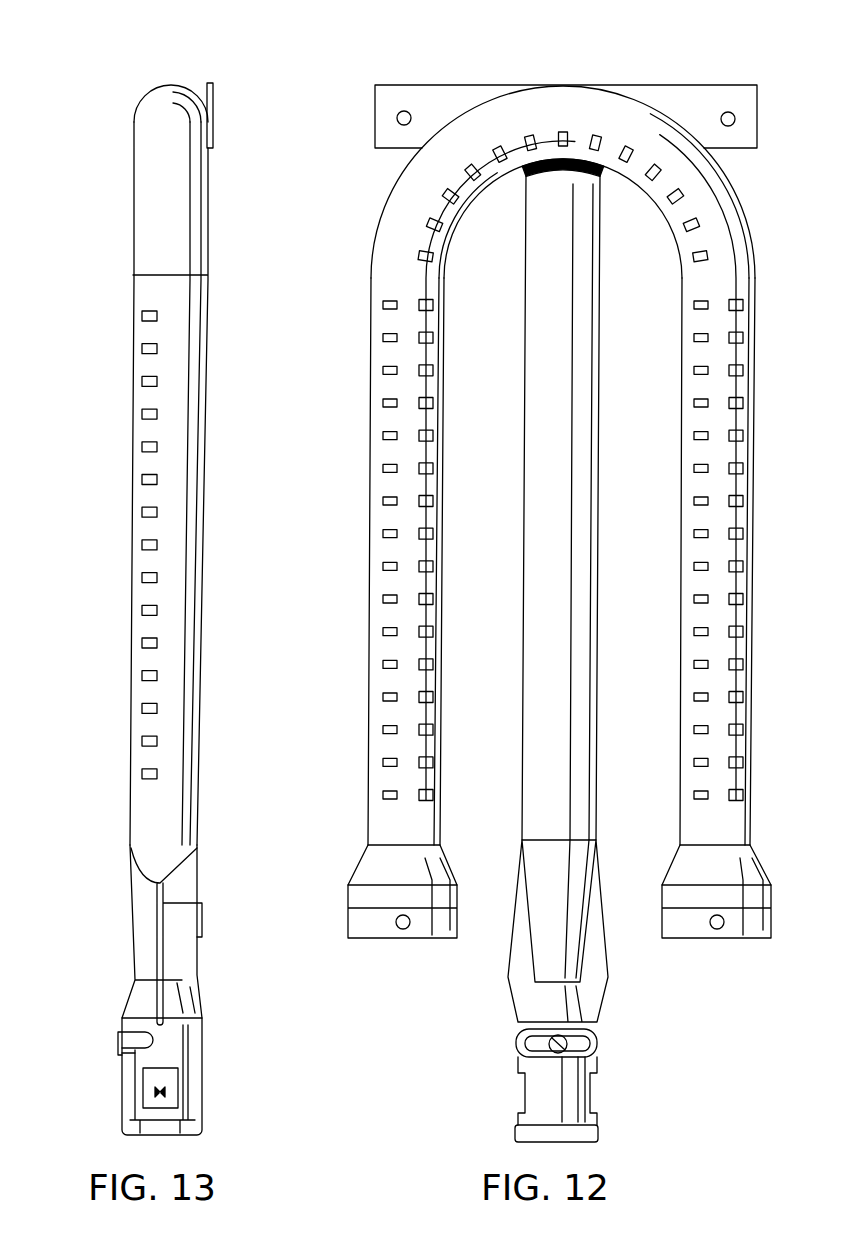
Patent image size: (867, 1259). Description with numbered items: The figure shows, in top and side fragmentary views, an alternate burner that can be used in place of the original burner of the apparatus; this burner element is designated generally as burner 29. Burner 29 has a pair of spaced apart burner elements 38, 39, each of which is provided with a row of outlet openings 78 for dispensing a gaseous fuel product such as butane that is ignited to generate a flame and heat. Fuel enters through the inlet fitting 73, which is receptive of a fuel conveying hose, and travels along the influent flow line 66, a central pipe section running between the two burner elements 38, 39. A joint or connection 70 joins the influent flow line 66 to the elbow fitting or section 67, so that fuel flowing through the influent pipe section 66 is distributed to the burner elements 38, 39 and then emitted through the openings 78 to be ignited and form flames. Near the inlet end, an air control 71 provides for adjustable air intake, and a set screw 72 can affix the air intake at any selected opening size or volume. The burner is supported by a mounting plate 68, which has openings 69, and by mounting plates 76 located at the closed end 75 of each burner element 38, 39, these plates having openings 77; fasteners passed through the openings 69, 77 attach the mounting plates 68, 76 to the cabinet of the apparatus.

In FIG. 12, the burner element 29 is at (406, 70).
In FIG. 13, the burner element 29 is at (104, 728).
In FIG. 12, the burner element 38 is at (370, 530).
In FIG. 12, the burner element 39 is at (742, 198).
In FIG. 12, the influent flow line 66 is at (540, 630).
In FIG. 12, the elbow fitting 67 is at (565, 105).
In FIG. 13, the elbow fitting 67 is at (165, 137).
In FIG. 12, the mounting plate 68 is at (682, 105).
In FIG. 13, the mounting plate 68 is at (213, 95).
In FIG. 12, the openings 69 is at (731, 112).
In FIG. 12, the joint or connection 70 is at (563, 172).
In FIG. 12, the air control 71 is at (535, 1082).
In FIG. 13, the air control 71 is at (125, 1060).
In FIG. 12, the set screw 72 is at (584, 1042).
In FIG. 12, the inlet fitting 73 is at (585, 1133).
In FIG. 12, the closed end 75 is at (330, 858).
In FIG. 12, the mounting plates 76 is at (362, 927).
In FIG. 12, the openings 77 is at (402, 930).
In FIG. 12, the outlet openings 78 is at (378, 406).
In FIG. 13, the outlet openings 78 is at (140, 478).